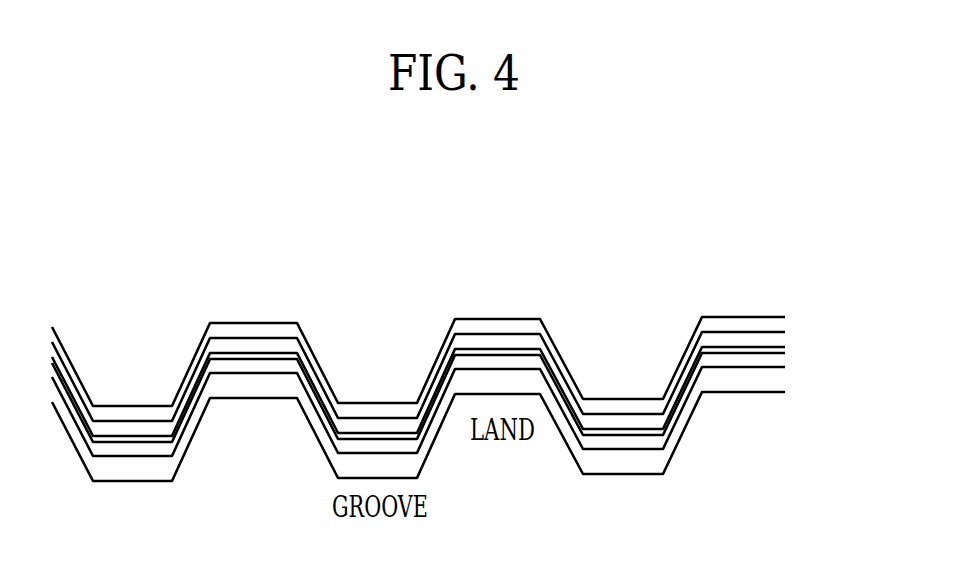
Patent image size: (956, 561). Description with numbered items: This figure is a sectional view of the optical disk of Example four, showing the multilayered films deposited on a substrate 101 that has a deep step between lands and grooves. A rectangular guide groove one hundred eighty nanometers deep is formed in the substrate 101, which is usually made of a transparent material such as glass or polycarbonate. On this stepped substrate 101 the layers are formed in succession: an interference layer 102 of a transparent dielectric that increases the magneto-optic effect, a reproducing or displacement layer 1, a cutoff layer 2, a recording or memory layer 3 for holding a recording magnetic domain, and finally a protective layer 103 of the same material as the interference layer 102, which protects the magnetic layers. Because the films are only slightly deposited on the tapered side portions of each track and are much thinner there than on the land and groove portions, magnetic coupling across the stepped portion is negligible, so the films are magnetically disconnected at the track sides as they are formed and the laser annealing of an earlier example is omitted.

The protective layer 103 is at (782, 325).
The recording layer 3 is at (783, 338).
The cutoff layer 2 is at (783, 352).
The reproducing layer 1 is at (782, 361).
The interference layer 102 is at (777, 376).
The substrate 101 is at (772, 407).